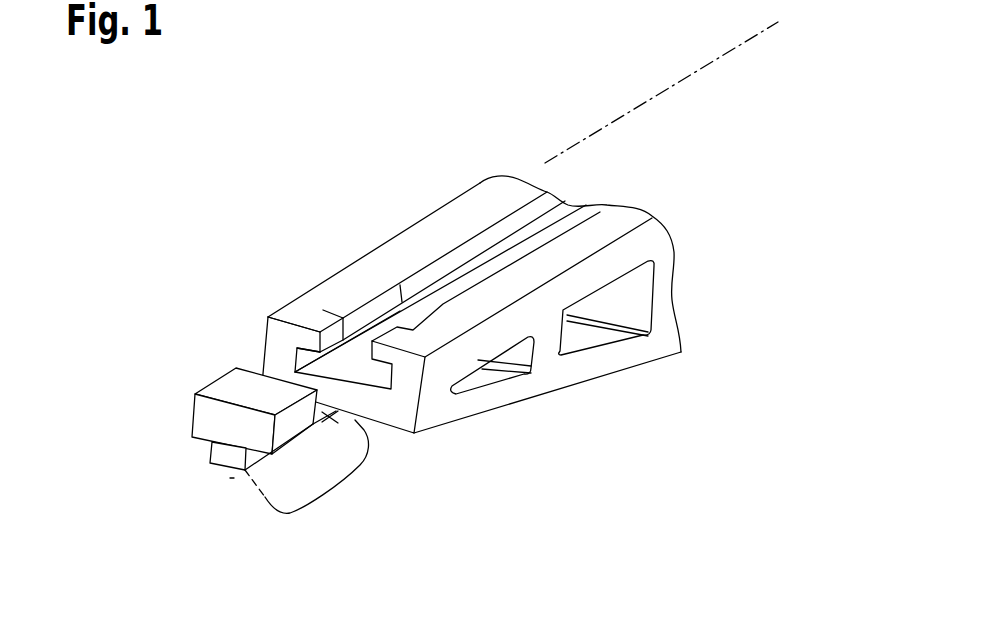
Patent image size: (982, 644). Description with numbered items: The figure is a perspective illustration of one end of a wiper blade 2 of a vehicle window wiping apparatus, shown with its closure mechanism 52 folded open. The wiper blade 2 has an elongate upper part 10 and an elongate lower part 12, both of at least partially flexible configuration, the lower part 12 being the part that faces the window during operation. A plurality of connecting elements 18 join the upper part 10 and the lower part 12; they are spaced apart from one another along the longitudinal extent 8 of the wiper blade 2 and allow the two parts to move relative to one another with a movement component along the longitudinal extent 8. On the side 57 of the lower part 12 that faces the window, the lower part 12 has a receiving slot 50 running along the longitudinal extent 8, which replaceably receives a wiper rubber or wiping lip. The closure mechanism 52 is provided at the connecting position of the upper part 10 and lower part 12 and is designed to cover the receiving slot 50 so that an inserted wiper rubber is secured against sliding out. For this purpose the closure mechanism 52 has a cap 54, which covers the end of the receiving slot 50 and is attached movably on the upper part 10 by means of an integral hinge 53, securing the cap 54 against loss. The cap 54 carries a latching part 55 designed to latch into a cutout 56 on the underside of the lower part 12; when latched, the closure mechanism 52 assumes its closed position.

The wiper blade 2 is at (512, 132).
The longitudinal extent 8 is at (762, 30).
The upper part 10 is at (616, 357).
The lower part 12 is at (637, 246).
The connecting elements 18 is at (660, 297).
The receiving slot 50 is at (349, 354).
The closure mechanism 52 is at (328, 489).
The hinge 53 is at (336, 414).
The cap 54 is at (232, 484).
The latching part 55 is at (232, 392).
The cutout 56 is at (402, 300).
The side 57 is at (433, 233).